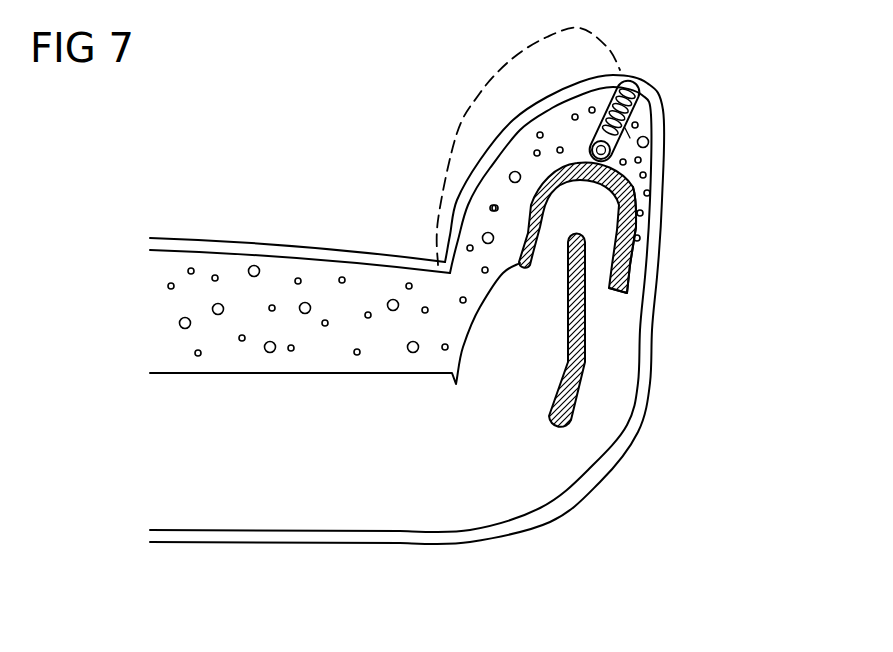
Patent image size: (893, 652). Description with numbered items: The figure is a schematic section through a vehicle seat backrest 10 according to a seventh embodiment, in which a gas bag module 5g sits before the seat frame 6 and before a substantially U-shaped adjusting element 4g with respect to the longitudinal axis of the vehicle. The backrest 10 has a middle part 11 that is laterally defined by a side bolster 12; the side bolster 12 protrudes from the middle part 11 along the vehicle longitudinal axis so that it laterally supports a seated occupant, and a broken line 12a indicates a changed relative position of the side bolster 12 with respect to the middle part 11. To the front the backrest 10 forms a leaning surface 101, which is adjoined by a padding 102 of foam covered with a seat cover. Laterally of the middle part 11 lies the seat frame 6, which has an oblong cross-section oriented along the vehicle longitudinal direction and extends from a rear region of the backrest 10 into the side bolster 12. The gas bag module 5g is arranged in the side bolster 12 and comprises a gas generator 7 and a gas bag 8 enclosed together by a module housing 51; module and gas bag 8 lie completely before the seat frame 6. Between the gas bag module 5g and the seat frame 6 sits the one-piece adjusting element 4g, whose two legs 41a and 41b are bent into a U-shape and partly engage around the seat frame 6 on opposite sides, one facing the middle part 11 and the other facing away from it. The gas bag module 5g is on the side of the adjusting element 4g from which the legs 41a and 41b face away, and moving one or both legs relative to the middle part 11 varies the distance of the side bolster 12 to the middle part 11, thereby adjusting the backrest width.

The backrest 10 is at (589, 512).
The side bolster 12 is at (531, 103).
The broken line 12a is at (478, 91).
The middle part 11 is at (200, 232).
The leaning surface 101 is at (263, 243).
The padding 102 is at (182, 303).
The leg 41b is at (530, 200).
The leg 41a is at (634, 223).
The adjusting element 4g is at (631, 187).
The seat frame 6 is at (573, 412).
The module housing 51 is at (640, 108).
The gas bag 8 is at (625, 90).
The gas generator 7 is at (596, 130).
The gas bag module 5g is at (630, 135).